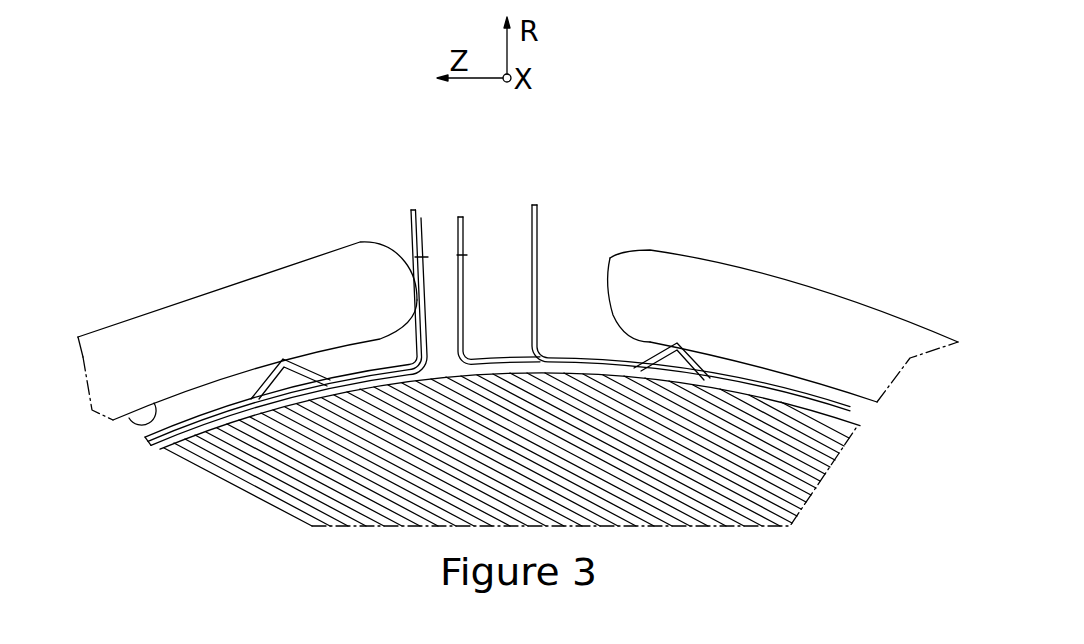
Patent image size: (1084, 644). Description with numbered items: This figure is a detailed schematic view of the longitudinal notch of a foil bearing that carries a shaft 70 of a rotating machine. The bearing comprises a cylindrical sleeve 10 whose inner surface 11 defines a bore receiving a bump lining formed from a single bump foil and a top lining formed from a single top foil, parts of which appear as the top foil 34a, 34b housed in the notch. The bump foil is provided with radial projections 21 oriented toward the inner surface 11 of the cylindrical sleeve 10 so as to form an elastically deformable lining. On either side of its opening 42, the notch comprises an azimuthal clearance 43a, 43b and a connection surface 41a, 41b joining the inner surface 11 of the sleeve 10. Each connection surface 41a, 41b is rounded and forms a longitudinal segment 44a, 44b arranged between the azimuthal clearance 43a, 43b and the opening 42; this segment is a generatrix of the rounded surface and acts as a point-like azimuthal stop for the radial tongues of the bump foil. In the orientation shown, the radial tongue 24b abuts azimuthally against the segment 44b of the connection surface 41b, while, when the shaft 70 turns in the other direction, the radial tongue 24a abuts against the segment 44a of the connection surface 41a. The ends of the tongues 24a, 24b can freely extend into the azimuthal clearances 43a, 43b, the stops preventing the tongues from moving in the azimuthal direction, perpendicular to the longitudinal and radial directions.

The cylindrical sleeve 10 is at (852, 327).
The inner surface 11 is at (128, 418).
The radial projections 21 is at (270, 373).
The radial tongue 24a is at (538, 217).
The radial tongue 24b is at (393, 245).
The top foil 34a is at (462, 233).
The top foil 34b is at (427, 255).
The connection surface 41a is at (613, 312).
The connection surface 41b is at (414, 318).
The opening 42 is at (492, 345).
The azimuthal clearance 43a is at (594, 240).
The azimuthal clearance 43b is at (412, 275).
The longitudinal segment 44a is at (612, 252).
The longitudinal segment 44b is at (415, 298).
The shaft 70 is at (275, 458).